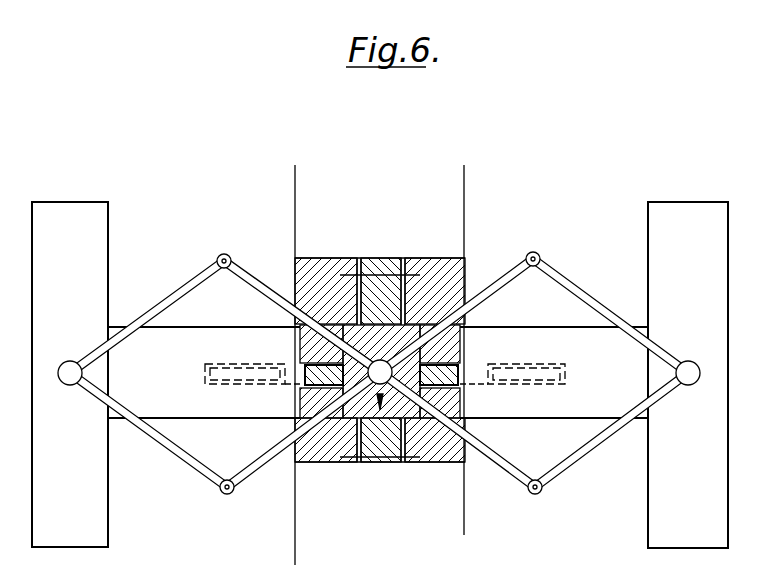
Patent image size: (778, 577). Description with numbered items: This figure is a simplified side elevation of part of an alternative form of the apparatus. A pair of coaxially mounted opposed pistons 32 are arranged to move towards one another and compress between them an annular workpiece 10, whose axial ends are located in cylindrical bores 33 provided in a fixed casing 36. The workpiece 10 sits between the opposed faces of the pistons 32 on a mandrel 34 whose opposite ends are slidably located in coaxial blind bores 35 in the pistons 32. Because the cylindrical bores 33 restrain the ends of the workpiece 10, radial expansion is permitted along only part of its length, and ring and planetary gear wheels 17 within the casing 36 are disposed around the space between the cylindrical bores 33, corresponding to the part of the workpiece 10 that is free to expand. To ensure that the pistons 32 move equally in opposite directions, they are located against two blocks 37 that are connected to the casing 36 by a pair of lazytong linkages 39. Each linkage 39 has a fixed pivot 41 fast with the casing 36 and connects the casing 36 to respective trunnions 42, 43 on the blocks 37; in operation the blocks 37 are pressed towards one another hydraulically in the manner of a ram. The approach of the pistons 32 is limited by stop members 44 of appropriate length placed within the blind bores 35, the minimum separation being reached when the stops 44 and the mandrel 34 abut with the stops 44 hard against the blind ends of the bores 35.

The annular workpiece 10 is at (379, 384).
The ring and planetary gear wheels 17 is at (388, 313).
The opposed pistons 32 is at (180, 361).
The cylindrical bores 33 is at (352, 323).
The mandrel 34 is at (399, 383).
The blind bores 35 is at (258, 360).
The fixed casing 36 is at (379, 365).
The blocks 37 is at (79, 273).
The lazytong linkages 39 is at (165, 452).
The fixed pivot 41 is at (360, 425).
The trunnion 42 is at (69, 383).
The trunnion 43 is at (689, 384).
The stop members 44 is at (265, 372).